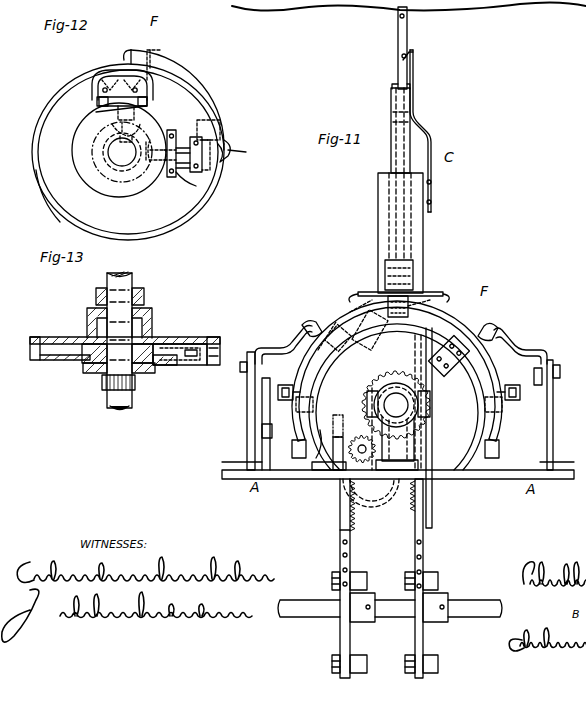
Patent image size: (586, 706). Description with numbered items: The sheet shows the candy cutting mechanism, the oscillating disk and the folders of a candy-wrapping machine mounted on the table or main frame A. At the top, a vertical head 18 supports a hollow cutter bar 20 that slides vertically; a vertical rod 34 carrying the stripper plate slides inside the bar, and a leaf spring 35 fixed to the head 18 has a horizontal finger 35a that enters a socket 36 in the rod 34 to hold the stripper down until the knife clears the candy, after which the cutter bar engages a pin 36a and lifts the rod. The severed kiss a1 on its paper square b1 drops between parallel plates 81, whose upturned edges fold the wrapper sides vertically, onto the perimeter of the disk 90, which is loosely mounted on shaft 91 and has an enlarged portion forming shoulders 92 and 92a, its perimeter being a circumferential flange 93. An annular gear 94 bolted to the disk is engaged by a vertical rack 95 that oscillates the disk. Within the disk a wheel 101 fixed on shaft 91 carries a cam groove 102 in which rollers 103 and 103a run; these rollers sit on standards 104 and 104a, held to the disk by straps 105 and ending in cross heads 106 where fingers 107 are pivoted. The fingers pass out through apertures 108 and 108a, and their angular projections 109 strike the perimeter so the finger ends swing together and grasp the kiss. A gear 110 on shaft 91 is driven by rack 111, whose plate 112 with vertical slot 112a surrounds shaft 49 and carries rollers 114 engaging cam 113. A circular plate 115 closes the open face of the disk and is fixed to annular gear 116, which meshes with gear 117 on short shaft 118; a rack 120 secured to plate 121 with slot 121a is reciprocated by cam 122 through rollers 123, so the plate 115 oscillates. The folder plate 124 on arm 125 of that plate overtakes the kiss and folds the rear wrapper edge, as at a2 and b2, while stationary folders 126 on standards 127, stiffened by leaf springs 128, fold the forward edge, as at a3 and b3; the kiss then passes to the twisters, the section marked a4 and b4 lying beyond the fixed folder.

In FIG. 11, the vertical head 18 is at (423, 226).
In FIG. 11, the cutter bar 20 is at (391, 104).
In FIG. 11, the vertical rod 34 is at (408, 30).
In FIG. 11, the leaf spring 35 is at (432, 140).
In FIG. 11, the horizontal finger 35a is at (412, 52).
In FIG. 11, the socket 36 is at (406, 16).
In FIG. 11, the pin 36a is at (392, 86).
In FIG. 11, the shaft 49 is at (500, 598).
In FIG. 11, the parallel plates 81 is at (360, 292).
In FIG. 12, the disk 90 is at (128, 152).
In FIG. 13, the disk 90 is at (36, 340).
In FIG. 11, the disk 90 is at (397, 397).
In FIG. 12, the shaft 91 is at (122, 152).
In FIG. 13, the shaft 91 is at (130, 278).
In FIG. 11, the shaft 91 is at (396, 420).
In FIG. 12, the shoulder 92 is at (174, 93).
In FIG. 11, the shoulder 92 is at (408, 312).
In FIG. 12, the shoulder 92a is at (237, 151).
In FIG. 13, the shoulder 92a is at (220, 342).
In FIG. 11, the shoulder 92a is at (516, 322).
In FIG. 12, the circumferential flange 93 is at (188, 205).
In FIG. 13, the circumferential flange 93 is at (33, 360).
In FIG. 11, the circumferential flange 93 is at (470, 448).
In FIG. 13, the annular gear 94 is at (157, 321).
In FIG. 11, the vertical rack 95 is at (433, 504).
In FIG. 12, the wheel 101 is at (96, 189).
In FIG. 13, the wheel 101 is at (78, 374).
In FIG. 12, the cam groove 102 is at (122, 152).
In FIG. 12, the roller 103 is at (125, 126).
In FIG. 12, the roller 103a is at (158, 140).
In FIG. 12, the standard 104 is at (116, 120).
In FIG. 12, the standard 104a is at (190, 186).
In FIG. 12, the strap 105 is at (157, 91).
In FIG. 12, the cross head 106 is at (119, 92).
In FIG. 12, the finger 107 is at (98, 90).
In FIG. 12, the aperture 108 is at (102, 70).
In FIG. 12, the aperture 108a is at (150, 54).
In FIG. 12, the angular projection 109 is at (121, 76).
In FIG. 13, the gear 110 is at (137, 385).
In FIG. 11, the rack 111 is at (424, 538).
In FIG. 11, the plate 112 is at (424, 568).
In FIG. 11, the vertical slot 112a is at (412, 634).
In FIG. 11, the cam 113 is at (440, 636).
In FIG. 11, the roller 114 is at (438, 580).
In FIG. 13, the circular plate 115 is at (170, 366).
In FIG. 11, the circular plate 115 is at (352, 421).
In FIG. 13, the annular gear 116 is at (163, 370).
In FIG. 11, the gear 117 is at (343, 442).
In FIG. 11, the short shaft 118 is at (346, 484).
In FIG. 11, the vertical rack 120 is at (351, 524).
In FIG. 11, the plate 121 is at (350, 566).
In FIG. 11, the vertical slot 121a is at (338, 626).
In FIG. 11, the cam 122 is at (360, 624).
In FIG. 11, the roller 123 is at (366, 576).
In FIG. 11, the folder plate 124 is at (466, 324).
In FIG. 11, the arm 125 is at (458, 338).
In FIG. 11, the stationary folder 126 is at (292, 346).
In FIG. 11, the standard 127 is at (247, 408).
In FIG. 11, the leaf spring 128 is at (298, 358).
In FIG. 11, the table or main frame A is at (398, 474).
In FIG. 11, the candy kiss a1 is at (408, 314).
In FIG. 11, the candy kiss a2 is at (318, 350).
In FIG. 11, the candy kiss a3 is at (288, 441).
In FIG. 11, the point a4 is at (502, 439).
In FIG. 11, the paper square b1 is at (372, 290).
In FIG. 11, the paper wrapper b2 is at (326, 326).
In FIG. 11, the paper wrapper b3 is at (306, 447).
In FIG. 11, the point b4 is at (502, 408).